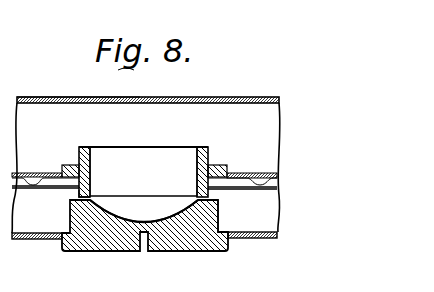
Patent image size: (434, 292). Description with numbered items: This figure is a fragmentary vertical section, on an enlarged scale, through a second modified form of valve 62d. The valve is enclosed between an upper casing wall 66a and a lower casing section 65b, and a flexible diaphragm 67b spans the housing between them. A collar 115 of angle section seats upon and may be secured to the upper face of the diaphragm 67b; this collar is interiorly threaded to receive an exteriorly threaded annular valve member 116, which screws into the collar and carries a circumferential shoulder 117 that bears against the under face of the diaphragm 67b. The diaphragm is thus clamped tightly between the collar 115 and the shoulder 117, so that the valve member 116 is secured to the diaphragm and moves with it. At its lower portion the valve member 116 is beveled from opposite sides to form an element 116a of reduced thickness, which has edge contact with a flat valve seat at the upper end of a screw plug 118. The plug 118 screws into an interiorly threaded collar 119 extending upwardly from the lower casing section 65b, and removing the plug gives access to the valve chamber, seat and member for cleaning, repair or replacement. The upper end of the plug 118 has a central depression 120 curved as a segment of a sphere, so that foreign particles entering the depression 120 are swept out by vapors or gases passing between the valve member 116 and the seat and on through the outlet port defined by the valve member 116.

The valve 62d is at (249, 92).
The lower casing section 66a is at (68, 96).
The diaphragm 67b is at (270, 170).
The collar 115 is at (214, 155).
The annular valve member 116 is at (115, 158).
The element of reduced thickness 116a is at (147, 196).
The circumferential shoulder 117 is at (78, 190).
The screw plug 118 is at (192, 243).
The interiorly threaded collar 119 is at (219, 207).
The central depression 120 is at (135, 213).
The lower casing section 65b is at (266, 239).